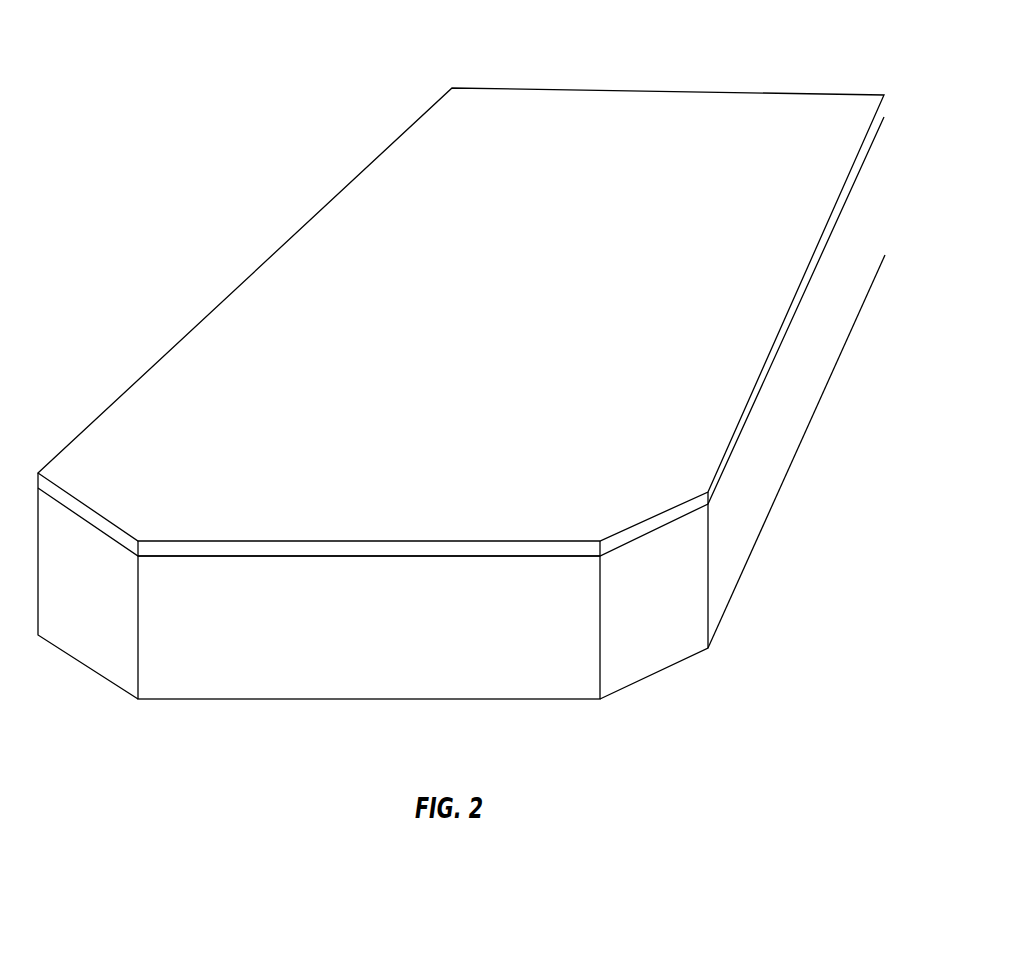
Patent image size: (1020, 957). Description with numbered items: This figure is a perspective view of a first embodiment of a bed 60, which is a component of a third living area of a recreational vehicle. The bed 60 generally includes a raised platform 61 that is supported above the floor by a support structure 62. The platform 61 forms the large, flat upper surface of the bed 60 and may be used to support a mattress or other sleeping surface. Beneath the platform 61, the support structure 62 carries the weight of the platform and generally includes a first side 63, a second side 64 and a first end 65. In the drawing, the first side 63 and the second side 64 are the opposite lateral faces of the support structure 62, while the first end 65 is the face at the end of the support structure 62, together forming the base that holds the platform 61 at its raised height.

The bed 60 is at (461, 416).
The raised platform 61 is at (475, 329).
The support structure 62 is at (790, 620).
The first side 63 is at (803, 393).
The second side 64 is at (136, 364).
The first end 65 is at (276, 684).